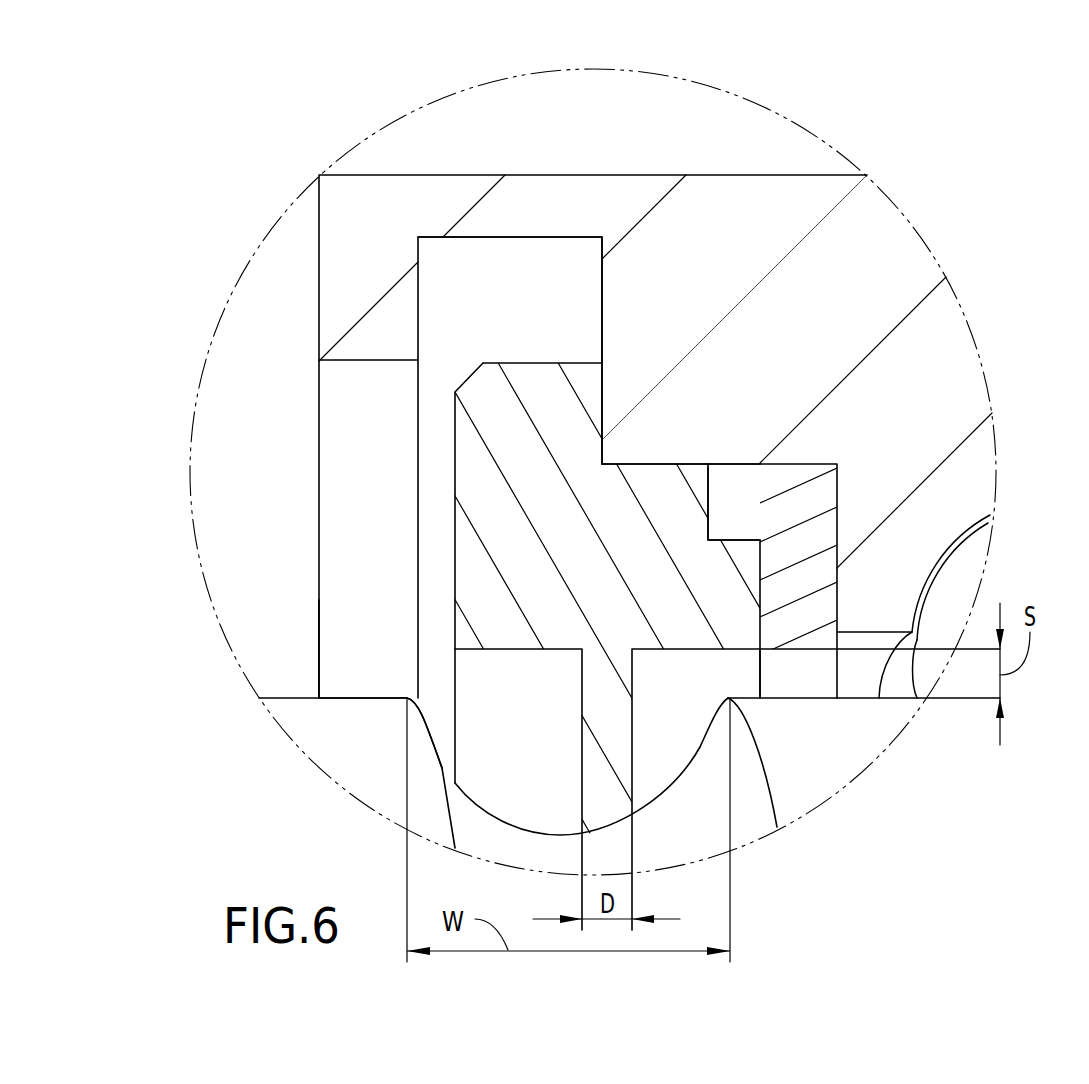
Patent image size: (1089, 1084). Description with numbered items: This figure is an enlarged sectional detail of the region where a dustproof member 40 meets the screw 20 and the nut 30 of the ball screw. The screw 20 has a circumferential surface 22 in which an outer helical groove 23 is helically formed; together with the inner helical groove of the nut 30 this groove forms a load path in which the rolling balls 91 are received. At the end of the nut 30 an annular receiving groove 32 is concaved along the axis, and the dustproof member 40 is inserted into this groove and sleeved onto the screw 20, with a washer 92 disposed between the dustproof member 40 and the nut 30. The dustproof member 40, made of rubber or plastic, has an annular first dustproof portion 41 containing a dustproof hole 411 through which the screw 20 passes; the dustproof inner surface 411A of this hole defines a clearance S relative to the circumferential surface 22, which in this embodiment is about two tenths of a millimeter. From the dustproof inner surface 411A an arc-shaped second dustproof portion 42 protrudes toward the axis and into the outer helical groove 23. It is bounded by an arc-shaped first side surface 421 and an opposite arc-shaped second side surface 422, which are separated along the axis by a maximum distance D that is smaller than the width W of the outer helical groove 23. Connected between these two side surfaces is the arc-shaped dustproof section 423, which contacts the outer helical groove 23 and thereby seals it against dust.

The screw 20 is at (278, 680).
The circumferential surface 22 is at (309, 697).
The outer helical groove 23 is at (582, 792).
The nut 30 is at (718, 203).
The annular receiving groove 32 is at (600, 303).
The dustproof member 40 is at (685, 458).
The first dustproof portion 41 is at (482, 560).
The dustproof hole 411 is at (470, 667).
The dustproof inner surface 411A is at (738, 650).
The second dustproof portion 42 is at (592, 708).
The arc-shaped first side surface 421 is at (580, 753).
The arc-shaped second side surface 422 is at (633, 668).
The arc-shaped dustproof section 423 is at (653, 807).
The rolling ball 91 is at (967, 564).
The washer 92 is at (812, 490).